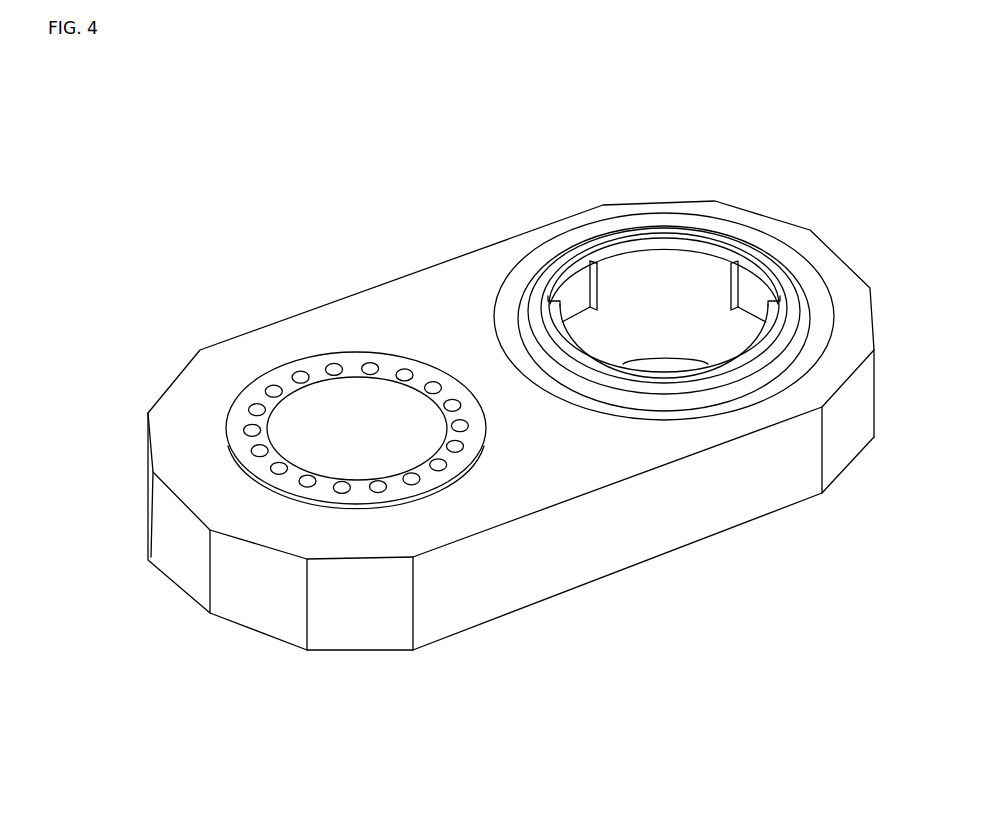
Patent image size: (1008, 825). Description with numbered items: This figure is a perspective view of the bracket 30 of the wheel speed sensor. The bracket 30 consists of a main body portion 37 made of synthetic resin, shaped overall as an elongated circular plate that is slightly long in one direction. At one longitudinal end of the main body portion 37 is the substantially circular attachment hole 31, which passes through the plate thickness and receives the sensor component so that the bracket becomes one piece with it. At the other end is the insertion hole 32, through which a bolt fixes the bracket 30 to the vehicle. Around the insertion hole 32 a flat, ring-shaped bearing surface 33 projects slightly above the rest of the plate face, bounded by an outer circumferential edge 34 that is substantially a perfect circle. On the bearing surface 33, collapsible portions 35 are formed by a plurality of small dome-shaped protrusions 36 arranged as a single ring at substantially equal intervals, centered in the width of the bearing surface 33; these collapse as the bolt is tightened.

The bracket 30 is at (360, 147).
The attachment hole 31 is at (653, 277).
The insertion hole 32 is at (340, 407).
The bearing surface 33 is at (423, 368).
The outer circumferential edge 34 is at (267, 490).
The collapsible portions 35 is at (273, 388).
The protrusions 36 is at (457, 448).
The main body portion 37 is at (483, 267).